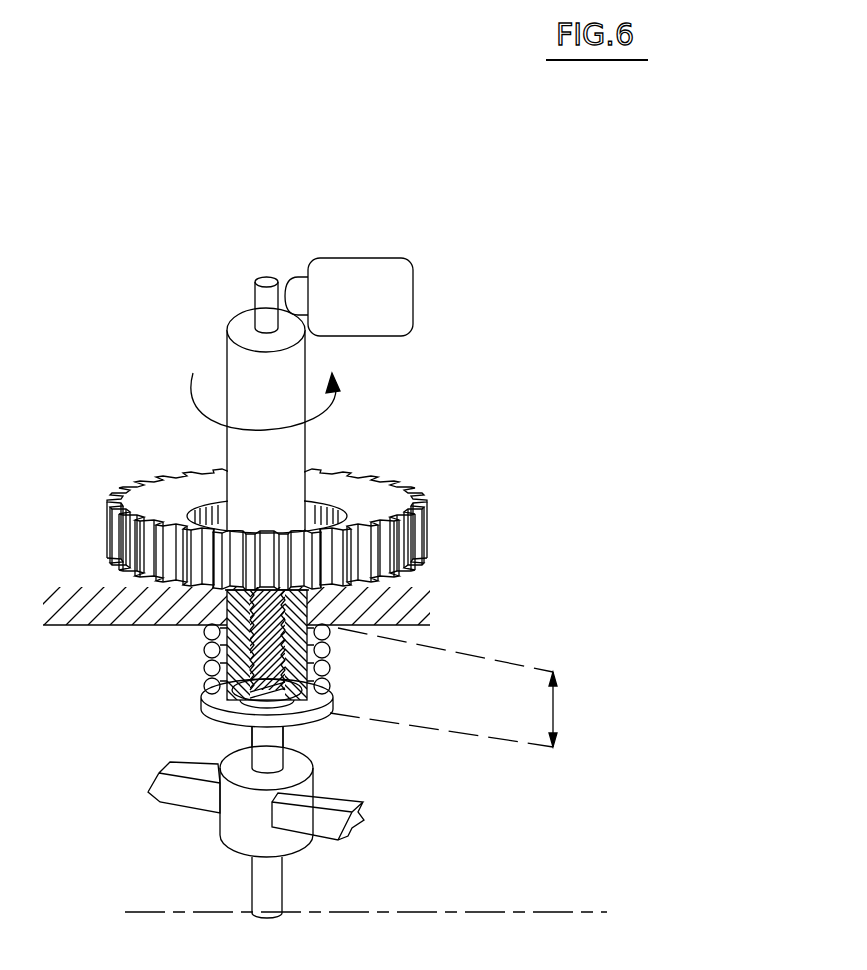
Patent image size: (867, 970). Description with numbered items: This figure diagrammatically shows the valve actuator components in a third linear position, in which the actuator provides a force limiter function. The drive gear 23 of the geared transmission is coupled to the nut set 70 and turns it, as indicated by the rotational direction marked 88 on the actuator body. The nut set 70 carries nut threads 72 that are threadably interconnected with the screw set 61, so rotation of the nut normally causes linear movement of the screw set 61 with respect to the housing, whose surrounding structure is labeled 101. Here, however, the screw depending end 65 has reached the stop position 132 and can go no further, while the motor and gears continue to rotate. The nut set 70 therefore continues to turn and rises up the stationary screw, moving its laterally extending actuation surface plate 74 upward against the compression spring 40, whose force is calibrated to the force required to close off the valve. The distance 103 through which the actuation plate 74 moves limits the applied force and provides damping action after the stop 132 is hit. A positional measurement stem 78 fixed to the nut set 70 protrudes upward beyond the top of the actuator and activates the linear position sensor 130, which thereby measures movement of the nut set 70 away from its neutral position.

The drive gear 23 is at (425, 490).
The rotation of shaft 88 is at (327, 414).
The positional measurement stem 78 is at (243, 289).
The linear position sensor 130 is at (403, 335).
The housing ground 101 is at (436, 606).
The nut threads 72 is at (232, 607).
The compression spring 40 is at (331, 660).
The actuation surface plate 74 is at (321, 726).
The screw set 61 is at (238, 709).
The distance 103 is at (556, 714).
The nut set 70 is at (345, 603).
The screw depending end 65 is at (253, 881).
The stop position 132 is at (415, 913).